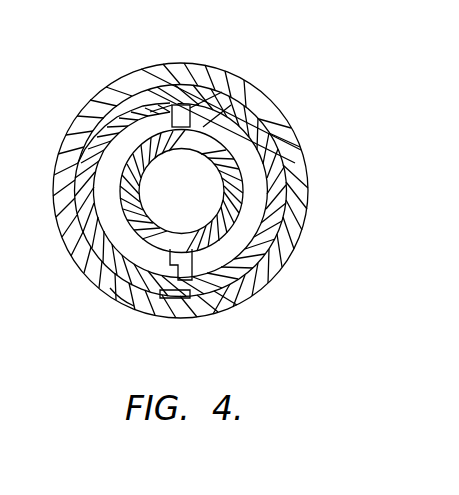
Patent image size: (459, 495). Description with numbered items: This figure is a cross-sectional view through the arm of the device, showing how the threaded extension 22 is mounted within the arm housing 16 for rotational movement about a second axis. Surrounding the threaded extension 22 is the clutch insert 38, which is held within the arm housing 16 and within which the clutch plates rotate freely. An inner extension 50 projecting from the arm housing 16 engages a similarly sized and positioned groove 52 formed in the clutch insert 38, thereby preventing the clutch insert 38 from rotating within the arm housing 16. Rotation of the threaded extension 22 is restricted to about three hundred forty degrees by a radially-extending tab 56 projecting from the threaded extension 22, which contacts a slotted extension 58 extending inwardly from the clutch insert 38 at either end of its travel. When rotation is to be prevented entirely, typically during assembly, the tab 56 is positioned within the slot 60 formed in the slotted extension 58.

The arm housing 16 is at (240, 87).
The clutch insert 38 is at (257, 130).
The threaded extension 22 is at (235, 236).
The slotted extension 58 is at (200, 112).
The slot 60 is at (179, 117).
The inner extension 50 is at (185, 298).
The groove 52 is at (162, 305).
The tab 56 is at (124, 298).